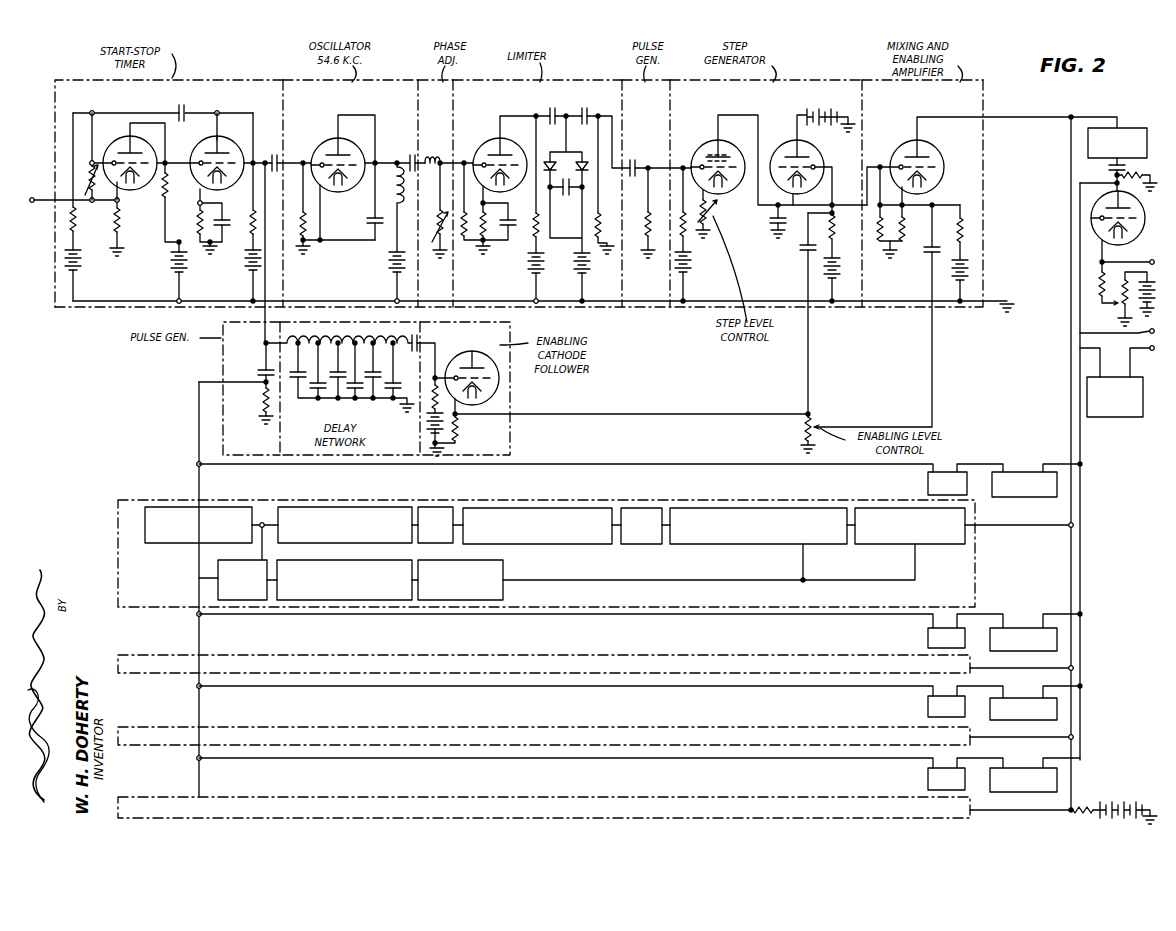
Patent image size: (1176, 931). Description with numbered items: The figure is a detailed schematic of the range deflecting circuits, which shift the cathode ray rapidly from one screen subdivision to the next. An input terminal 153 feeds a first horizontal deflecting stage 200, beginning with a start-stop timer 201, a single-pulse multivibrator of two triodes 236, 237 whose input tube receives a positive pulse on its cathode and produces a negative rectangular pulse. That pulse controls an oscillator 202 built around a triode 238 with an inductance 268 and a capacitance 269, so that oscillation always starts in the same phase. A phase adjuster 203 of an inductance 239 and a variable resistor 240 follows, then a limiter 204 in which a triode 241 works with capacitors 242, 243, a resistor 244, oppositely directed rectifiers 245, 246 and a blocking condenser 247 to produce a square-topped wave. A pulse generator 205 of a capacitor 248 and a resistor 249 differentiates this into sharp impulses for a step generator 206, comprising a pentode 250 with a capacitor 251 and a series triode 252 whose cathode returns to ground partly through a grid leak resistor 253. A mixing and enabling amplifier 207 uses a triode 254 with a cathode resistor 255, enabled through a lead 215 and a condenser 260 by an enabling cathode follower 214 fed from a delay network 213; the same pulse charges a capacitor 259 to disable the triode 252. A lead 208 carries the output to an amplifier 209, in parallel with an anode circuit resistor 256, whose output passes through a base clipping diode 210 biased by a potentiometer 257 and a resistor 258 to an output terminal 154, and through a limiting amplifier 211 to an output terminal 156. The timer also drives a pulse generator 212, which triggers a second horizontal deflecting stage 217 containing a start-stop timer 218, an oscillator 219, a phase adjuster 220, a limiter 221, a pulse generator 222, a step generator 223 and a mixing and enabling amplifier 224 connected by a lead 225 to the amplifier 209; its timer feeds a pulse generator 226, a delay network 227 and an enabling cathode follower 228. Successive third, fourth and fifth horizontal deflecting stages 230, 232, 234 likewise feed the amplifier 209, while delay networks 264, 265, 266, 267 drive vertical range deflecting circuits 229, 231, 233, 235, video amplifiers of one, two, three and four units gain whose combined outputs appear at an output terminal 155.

The input terminal 153 is at (64, 186).
The output terminal 154 is at (1150, 261).
The output terminal 155 is at (1150, 334).
The output terminal 156 is at (1150, 352).
The first horizontal deflecting stage 200 is at (60, 78).
The start-stop timer 201 is at (56, 112).
The oscillator 202 is at (290, 85).
The phase adjuster 203 is at (456, 90).
The limiter 204 is at (597, 88).
The pulse generator 205 is at (648, 88).
The step generator 206 is at (803, 88).
The mixing and enabling amplifier 207 is at (975, 110).
The lead 208 is at (1071, 117).
The amplifier 209 is at (1136, 128).
The base clipping diode 210 is at (1091, 218).
The limiting amplifier 211 is at (1118, 418).
The pulse generator 212 is at (222, 362).
The delay network 213 is at (379, 456).
The enabling cathode follower 214 is at (502, 399).
The lead 215 is at (748, 415).
The second horizontal deflecting stage 217 is at (118, 568).
The start-stop timer 218 is at (185, 543).
The oscillator 219 is at (326, 507).
The phase adjuster 220 is at (449, 507).
The limiter 221 is at (565, 507).
The pulse generator 222 is at (633, 508).
The step generator 223 is at (728, 508).
The mixing and enabling amplifier 224 is at (850, 508).
The lead 225 is at (1000, 526).
The pulse generator 226 is at (218, 580).
The delay network 227 is at (380, 566).
The enabling cathode follower 228 is at (503, 571).
The vertical range deflecting circuit 229 is at (1025, 467).
The third horizontal deflecting stage 230 is at (395, 655).
The vertical range deflecting circuit 231 is at (1034, 628).
The fourth horizontal deflecting stage 232 is at (405, 727).
The vertical range deflecting circuit 233 is at (1036, 698).
The fifth horizontal deflecting stage 234 is at (406, 800).
The vertical range deflecting circuit 235 is at (1036, 768).
The triode 236 is at (143, 190).
The triode 237 is at (220, 190).
The triode 238 is at (350, 190).
The inductance 239 is at (437, 160).
The variable resistor 240 is at (437, 250).
The triode 241 is at (490, 150).
The capacitor 242 is at (549, 110).
The capacitor 243 is at (581, 114).
The resistor 244 is at (600, 230).
The rectifier 245 is at (549, 160).
The rectifier 246 is at (583, 160).
The blocking condenser 247 is at (566, 190).
The capacitor 248 is at (640, 148).
The resistor 249 is at (648, 237).
The pentode 250 is at (718, 189).
The capacitor 251 is at (763, 215).
The triode 252 is at (806, 164).
The grid leak resistor 253 is at (876, 240).
The triode 254 is at (936, 155).
The cathode resistor 255 is at (905, 240).
The anode circuit resistor 256 is at (1085, 808).
The potentiometer 257 is at (1120, 303).
The resistor 258 is at (1098, 285).
The capacitor 259 is at (800, 250).
The condenser 260 is at (937, 217).
The delay network 264 is at (928, 487).
The delay network 265 is at (928, 640).
The delay network 266 is at (928, 709).
The delay network 267 is at (928, 782).
The inductance 268 is at (397, 163).
The capacitance 269 is at (368, 224).